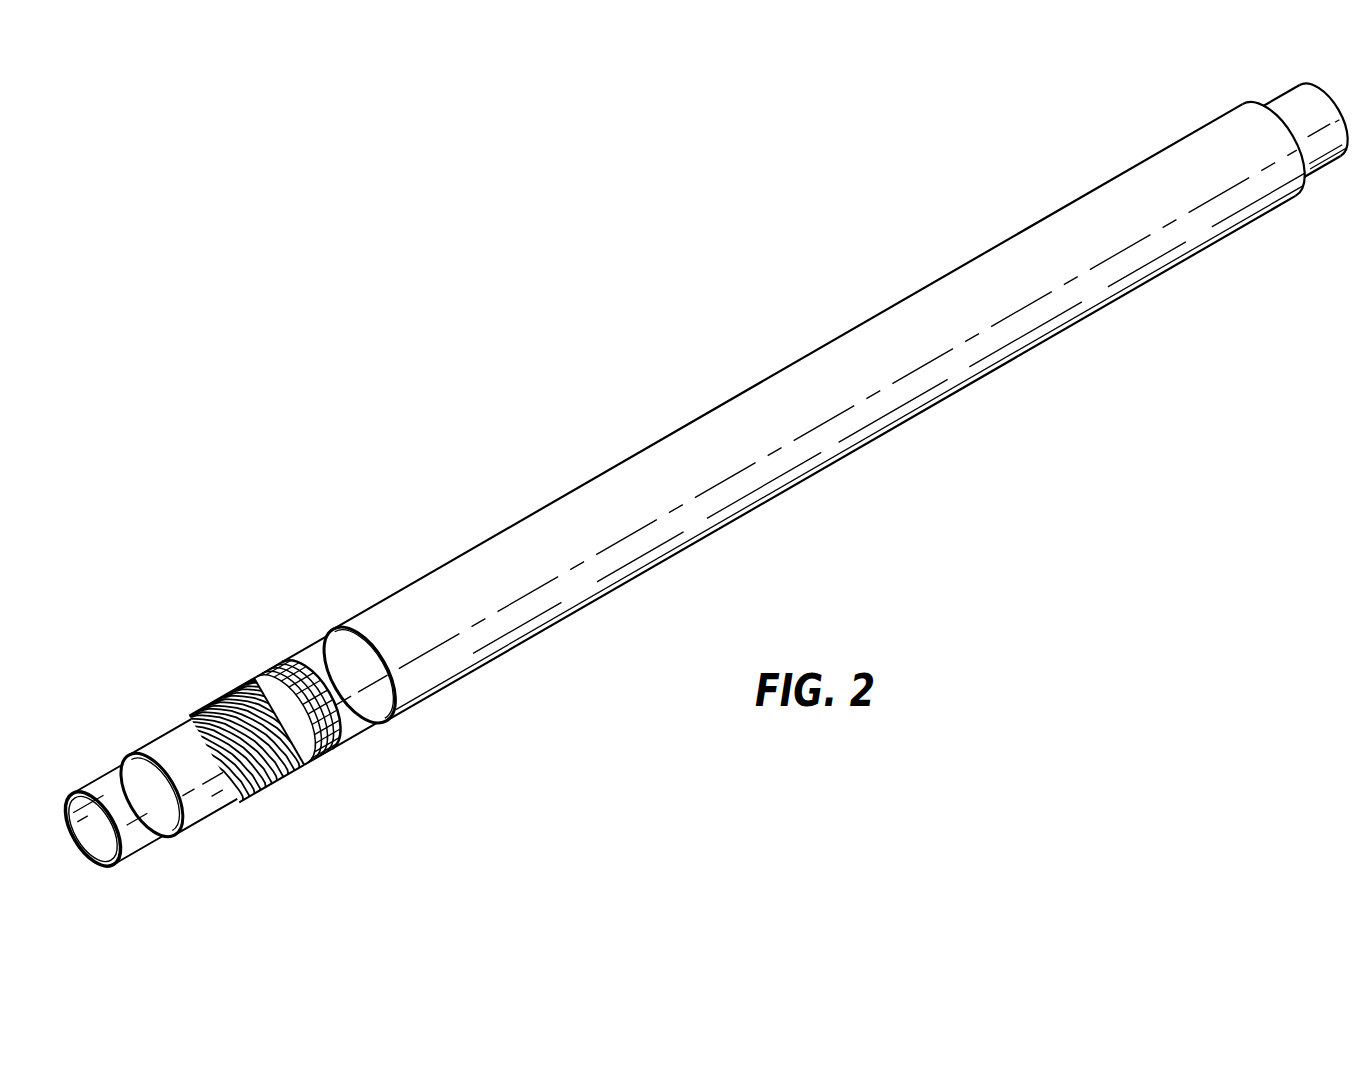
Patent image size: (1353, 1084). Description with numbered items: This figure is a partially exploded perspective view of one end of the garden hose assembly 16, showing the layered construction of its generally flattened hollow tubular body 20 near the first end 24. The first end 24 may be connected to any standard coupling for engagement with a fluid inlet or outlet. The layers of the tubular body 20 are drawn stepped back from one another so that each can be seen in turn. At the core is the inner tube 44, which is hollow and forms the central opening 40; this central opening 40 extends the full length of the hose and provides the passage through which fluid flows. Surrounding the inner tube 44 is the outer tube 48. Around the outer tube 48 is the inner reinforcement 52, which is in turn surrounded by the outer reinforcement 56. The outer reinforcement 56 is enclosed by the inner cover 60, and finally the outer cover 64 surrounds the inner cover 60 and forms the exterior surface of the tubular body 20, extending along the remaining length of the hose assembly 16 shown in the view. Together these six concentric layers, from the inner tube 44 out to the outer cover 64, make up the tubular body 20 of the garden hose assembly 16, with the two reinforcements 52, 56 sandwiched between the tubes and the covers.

The garden hose assembly 16 is at (578, 396).
The tubular body 20 is at (897, 435).
The first end 24 is at (73, 779).
The central opening 40 is at (109, 830).
The inner tube 44 is at (137, 861).
The outer tube 48 is at (203, 828).
The inner reinforcement 52 is at (262, 794).
The outer reinforcement 56 is at (307, 764).
The inner cover 60 is at (360, 743).
The outer cover 64 is at (413, 711).